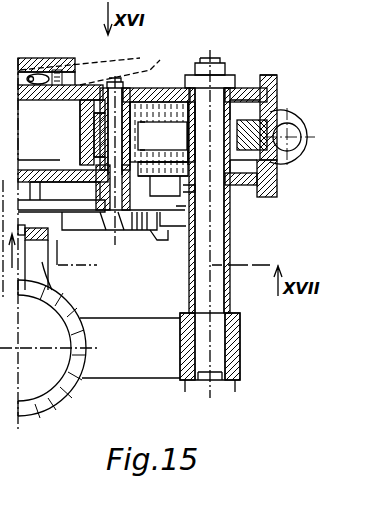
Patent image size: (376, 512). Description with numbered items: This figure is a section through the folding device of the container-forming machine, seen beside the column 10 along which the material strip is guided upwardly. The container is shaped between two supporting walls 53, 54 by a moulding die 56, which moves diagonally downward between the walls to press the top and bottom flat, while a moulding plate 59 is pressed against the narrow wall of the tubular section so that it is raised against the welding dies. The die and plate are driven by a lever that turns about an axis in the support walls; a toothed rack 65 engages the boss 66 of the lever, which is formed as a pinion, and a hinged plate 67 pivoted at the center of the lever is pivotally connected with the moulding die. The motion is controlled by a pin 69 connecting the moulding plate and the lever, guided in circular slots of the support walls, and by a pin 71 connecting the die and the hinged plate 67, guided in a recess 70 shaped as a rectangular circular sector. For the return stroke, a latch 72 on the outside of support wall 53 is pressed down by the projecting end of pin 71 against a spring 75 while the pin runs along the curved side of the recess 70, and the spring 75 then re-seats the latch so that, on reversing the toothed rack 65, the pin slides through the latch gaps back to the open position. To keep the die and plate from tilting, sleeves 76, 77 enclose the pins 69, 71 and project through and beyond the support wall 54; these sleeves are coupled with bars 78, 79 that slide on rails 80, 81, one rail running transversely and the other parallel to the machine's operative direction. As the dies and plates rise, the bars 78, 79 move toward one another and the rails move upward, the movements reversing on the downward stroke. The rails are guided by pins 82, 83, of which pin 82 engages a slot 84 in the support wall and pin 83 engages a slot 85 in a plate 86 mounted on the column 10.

The column 10 is at (65, 312).
The supporting wall 53 is at (240, 88).
The supporting wall 54 is at (277, 179).
The moulding die 56 is at (86, 110).
The moulding plate 59 is at (162, 113).
The toothed rack 65 is at (285, 110).
The boss 66 is at (242, 120).
The hinged plate 67 is at (182, 88).
The pin 69 is at (142, 226).
The recess 70 is at (165, 117).
The pin 71 is at (112, 224).
The latch 72 is at (113, 80).
The spring 75 is at (60, 72).
The sleeve 76 is at (100, 224).
The sleeve 77 is at (160, 224).
The bar 78 is at (60, 190).
The bar 79 is at (78, 226).
The rail 80 is at (189, 189).
The rail 81 is at (156, 238).
The pin 82 is at (38, 172).
The pin 83 is at (19, 230).
The slot 84 is at (24, 170).
The slot 85 is at (35, 259).
The plate 86 is at (50, 252).